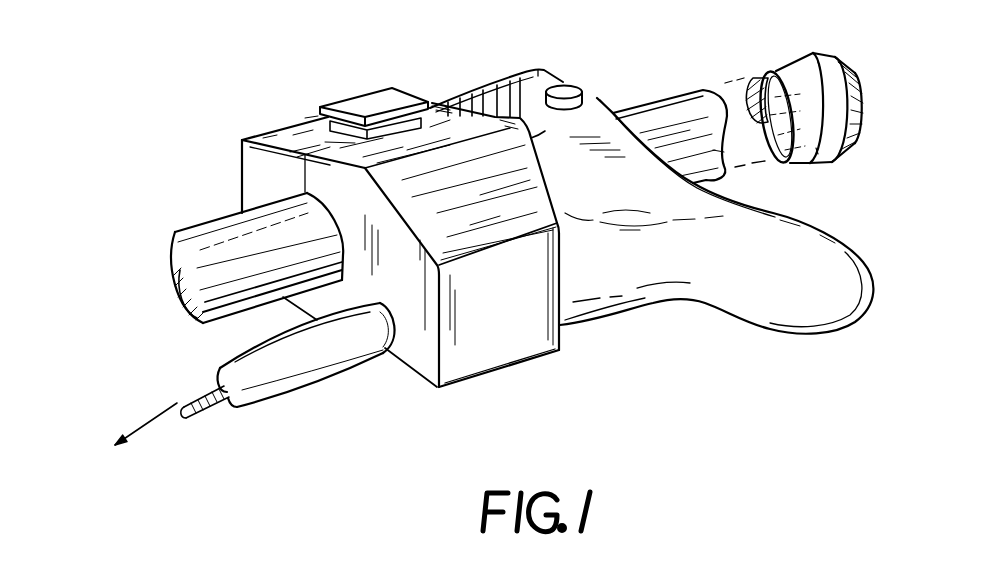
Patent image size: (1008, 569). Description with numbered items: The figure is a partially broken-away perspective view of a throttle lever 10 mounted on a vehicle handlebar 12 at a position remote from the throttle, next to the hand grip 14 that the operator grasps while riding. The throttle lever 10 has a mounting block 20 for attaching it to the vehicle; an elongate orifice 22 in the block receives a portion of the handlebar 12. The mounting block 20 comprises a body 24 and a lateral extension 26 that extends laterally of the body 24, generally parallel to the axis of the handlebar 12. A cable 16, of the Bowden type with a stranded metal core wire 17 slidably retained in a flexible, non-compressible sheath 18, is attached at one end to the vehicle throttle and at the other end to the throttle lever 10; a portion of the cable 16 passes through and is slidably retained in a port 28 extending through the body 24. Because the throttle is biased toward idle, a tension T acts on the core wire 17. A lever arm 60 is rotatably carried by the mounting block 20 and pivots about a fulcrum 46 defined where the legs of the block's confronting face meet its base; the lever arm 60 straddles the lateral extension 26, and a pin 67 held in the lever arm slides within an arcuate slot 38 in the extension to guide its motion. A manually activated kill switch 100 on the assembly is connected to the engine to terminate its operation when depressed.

The throttle lever 10 is at (183, 75).
The handlebar 12 is at (212, 232).
The hand grip 14 is at (677, 107).
The cable 16 is at (210, 362).
The core wire 17 is at (203, 412).
The sheath 18 is at (306, 357).
The mounting block 20 is at (278, 138).
The elongate orifice 22 is at (310, 192).
The body 24 is at (520, 328).
The lateral extension 26 is at (538, 72).
The port 28 is at (388, 352).
The arcuate slot 38 is at (490, 85).
The fulcrum 46 is at (545, 131).
The lever arm 60 is at (707, 263).
The pin 67 is at (564, 90).
The kill switch 100 is at (371, 100).
The tension T is at (146, 419).